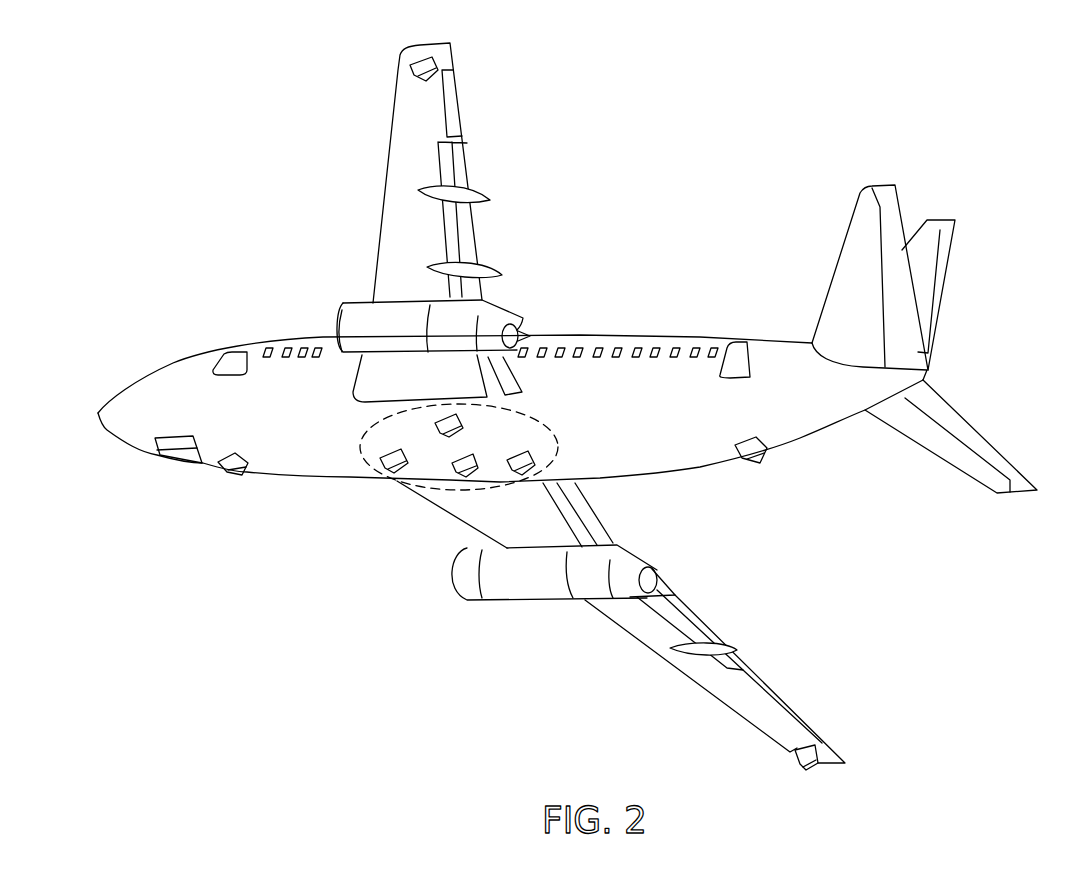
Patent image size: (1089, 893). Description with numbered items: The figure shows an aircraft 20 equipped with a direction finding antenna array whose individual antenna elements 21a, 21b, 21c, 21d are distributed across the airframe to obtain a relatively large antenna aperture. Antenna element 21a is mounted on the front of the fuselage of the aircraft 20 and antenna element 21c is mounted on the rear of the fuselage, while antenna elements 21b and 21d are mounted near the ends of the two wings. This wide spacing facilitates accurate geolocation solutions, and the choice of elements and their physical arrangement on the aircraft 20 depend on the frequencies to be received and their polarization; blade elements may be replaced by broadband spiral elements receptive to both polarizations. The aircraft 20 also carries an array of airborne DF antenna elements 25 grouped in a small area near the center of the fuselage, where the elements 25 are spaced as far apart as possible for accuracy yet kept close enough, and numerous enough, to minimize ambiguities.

The aircraft 20 is at (667, 335).
The antenna element 21a is at (232, 478).
The antenna element 21b is at (403, 74).
The antenna element 21c is at (757, 465).
The antenna element 21d is at (808, 772).
The array of airborne DF antenna elements 25 is at (360, 450).